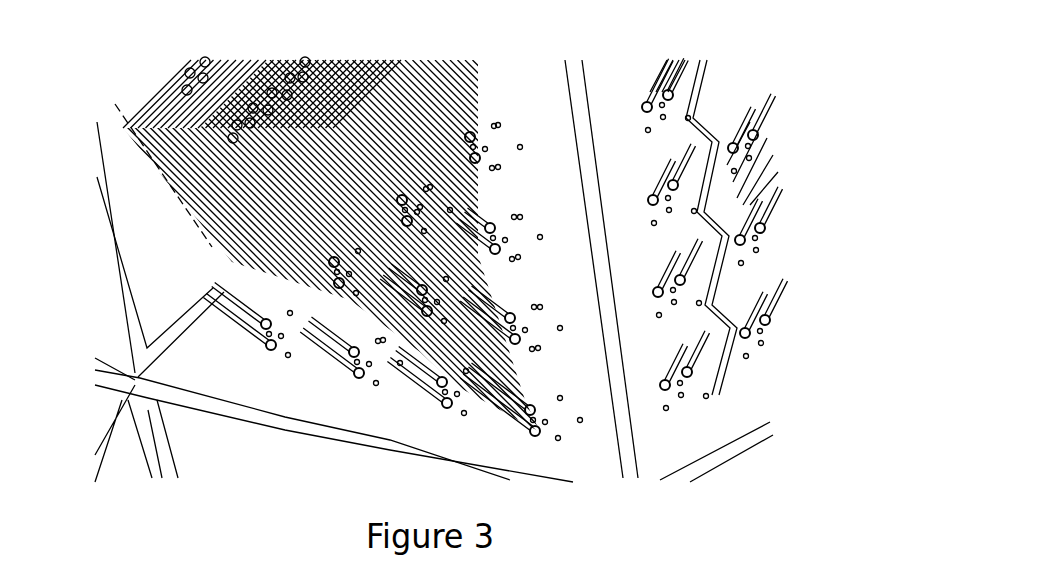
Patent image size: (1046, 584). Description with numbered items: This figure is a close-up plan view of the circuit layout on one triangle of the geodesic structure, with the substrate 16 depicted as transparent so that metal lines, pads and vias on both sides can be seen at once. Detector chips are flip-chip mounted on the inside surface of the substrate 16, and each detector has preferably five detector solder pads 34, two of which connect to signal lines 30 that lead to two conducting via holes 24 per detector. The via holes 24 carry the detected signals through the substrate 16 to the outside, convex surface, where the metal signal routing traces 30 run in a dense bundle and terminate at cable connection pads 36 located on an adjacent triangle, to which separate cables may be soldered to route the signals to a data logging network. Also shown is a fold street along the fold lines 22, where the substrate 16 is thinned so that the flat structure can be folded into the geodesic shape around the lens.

The cable connection pads 36 is at (222, 80).
The fold lines 22 is at (431, 57).
The substrate 16 is at (542, 75).
The signal lines 30 is at (333, 355).
The via holes 24 is at (533, 436).
The bond pad locations 34 is at (566, 444).